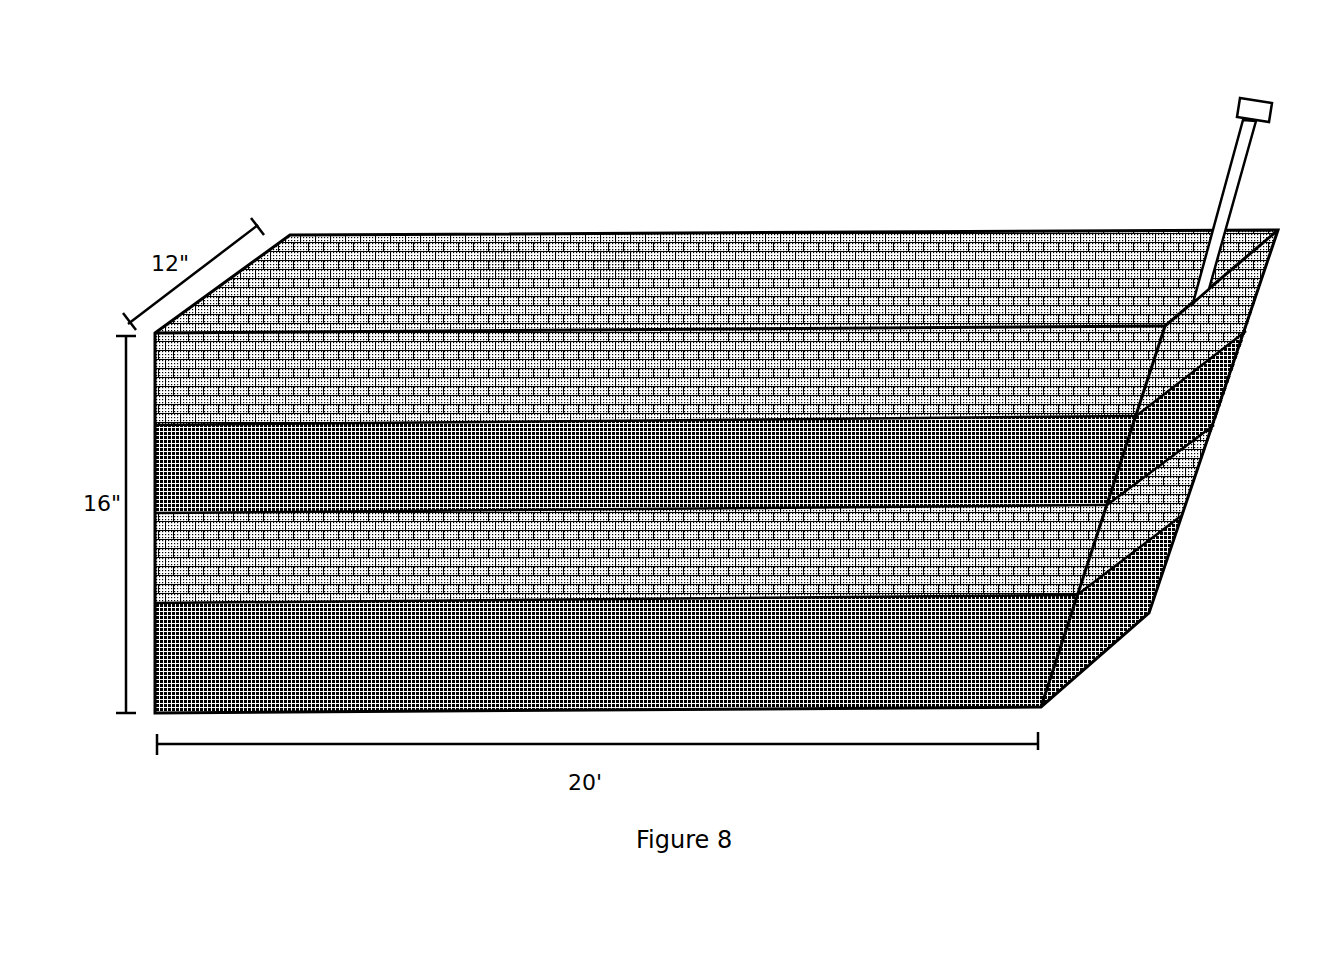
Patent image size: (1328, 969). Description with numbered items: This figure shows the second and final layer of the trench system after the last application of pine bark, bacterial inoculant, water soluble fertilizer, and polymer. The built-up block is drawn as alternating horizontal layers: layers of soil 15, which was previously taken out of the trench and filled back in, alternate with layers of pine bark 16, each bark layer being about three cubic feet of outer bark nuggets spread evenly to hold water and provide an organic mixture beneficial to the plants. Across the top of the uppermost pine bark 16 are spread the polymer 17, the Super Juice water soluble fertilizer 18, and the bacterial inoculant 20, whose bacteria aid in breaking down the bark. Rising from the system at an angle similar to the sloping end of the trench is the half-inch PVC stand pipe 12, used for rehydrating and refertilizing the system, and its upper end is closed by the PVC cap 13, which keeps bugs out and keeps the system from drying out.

The PVC stand pipe 12 is at (1232, 145).
The PVC cap 13 is at (1240, 97).
The soil 15 is at (1198, 370).
The pine bark 16 is at (1240, 271).
The polymer 17 is at (363, 250).
The water soluble fertilizer 18 is at (492, 253).
The bacterial inoculant 20 is at (607, 257).